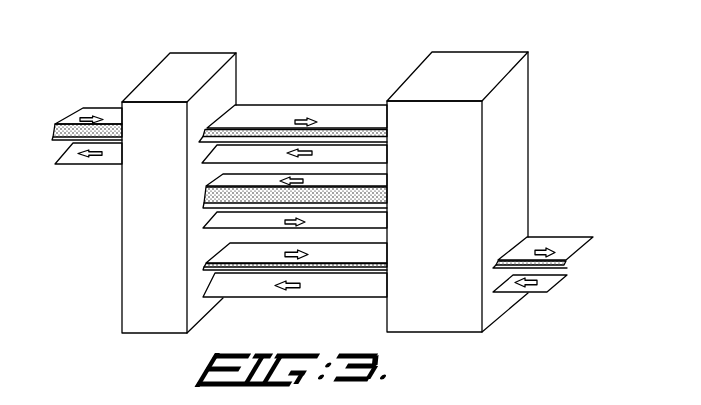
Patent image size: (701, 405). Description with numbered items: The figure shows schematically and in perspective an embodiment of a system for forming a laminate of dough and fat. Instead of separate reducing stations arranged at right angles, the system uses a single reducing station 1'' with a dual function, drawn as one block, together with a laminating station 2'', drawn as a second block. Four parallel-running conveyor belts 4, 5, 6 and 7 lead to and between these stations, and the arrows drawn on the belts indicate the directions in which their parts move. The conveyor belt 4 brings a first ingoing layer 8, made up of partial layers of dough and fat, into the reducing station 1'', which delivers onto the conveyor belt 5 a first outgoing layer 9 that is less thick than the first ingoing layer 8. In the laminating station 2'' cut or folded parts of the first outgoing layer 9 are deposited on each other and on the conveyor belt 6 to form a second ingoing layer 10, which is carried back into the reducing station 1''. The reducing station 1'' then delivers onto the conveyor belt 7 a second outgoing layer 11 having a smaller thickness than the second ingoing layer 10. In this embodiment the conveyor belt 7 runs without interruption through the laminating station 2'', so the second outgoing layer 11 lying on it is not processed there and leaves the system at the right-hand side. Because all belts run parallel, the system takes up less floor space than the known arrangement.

The reducing station 1'' is at (182, 172).
The laminating station 2'' is at (457, 177).
The first conveyor belt 4 is at (75, 144).
The second conveyor belt 5 is at (343, 153).
The third conveyor belt 6 is at (374, 207).
The fourth conveyor belt 7 is at (325, 276).
The first ingoing layer 8 is at (73, 117).
The first outgoing layer 9 is at (245, 122).
The second ingoing layer 10 is at (377, 182).
The second outgoing layer 11 is at (234, 259).